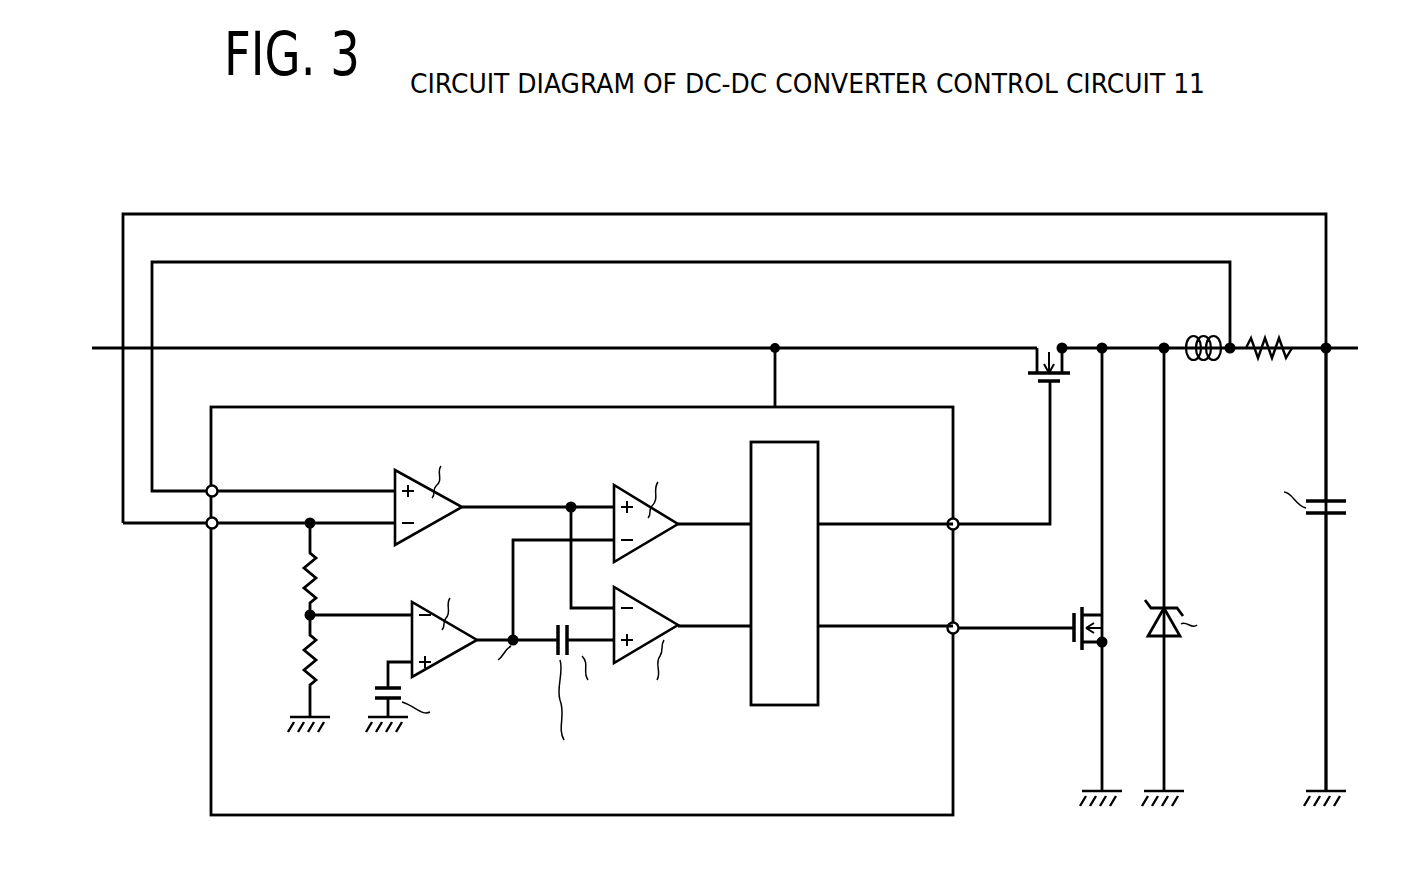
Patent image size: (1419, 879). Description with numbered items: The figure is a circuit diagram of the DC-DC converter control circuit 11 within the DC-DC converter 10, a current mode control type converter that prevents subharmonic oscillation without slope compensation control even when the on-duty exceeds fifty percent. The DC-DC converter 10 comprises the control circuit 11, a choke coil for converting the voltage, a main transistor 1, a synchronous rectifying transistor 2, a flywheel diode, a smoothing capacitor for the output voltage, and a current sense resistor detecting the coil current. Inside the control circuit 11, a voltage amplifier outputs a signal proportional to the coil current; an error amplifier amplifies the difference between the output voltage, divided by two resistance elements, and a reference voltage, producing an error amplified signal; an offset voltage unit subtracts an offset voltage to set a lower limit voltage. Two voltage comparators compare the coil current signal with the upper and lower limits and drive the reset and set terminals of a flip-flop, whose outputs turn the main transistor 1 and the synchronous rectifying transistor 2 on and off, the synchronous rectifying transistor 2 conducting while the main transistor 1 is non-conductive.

The DC-DC converter 10 is at (970, 197).
The DC-DC converter control circuit 11 is at (872, 407).
The FET1 main switching transistor 1 is at (1012, 416).
The FET2 synchronous rectifier transistor 2 is at (1030, 645).